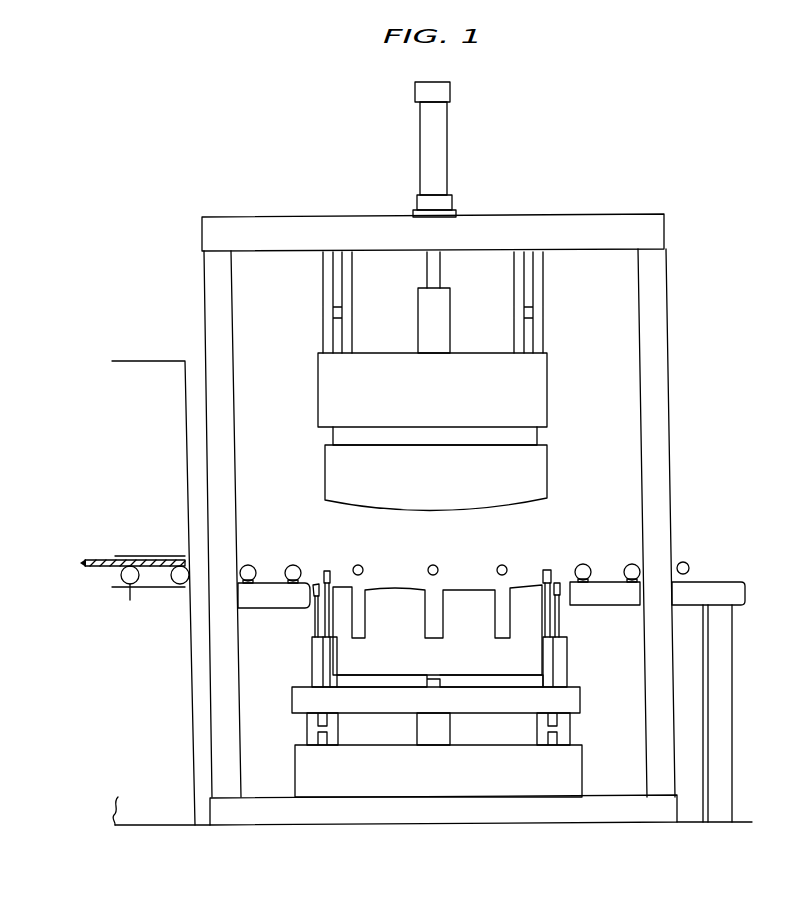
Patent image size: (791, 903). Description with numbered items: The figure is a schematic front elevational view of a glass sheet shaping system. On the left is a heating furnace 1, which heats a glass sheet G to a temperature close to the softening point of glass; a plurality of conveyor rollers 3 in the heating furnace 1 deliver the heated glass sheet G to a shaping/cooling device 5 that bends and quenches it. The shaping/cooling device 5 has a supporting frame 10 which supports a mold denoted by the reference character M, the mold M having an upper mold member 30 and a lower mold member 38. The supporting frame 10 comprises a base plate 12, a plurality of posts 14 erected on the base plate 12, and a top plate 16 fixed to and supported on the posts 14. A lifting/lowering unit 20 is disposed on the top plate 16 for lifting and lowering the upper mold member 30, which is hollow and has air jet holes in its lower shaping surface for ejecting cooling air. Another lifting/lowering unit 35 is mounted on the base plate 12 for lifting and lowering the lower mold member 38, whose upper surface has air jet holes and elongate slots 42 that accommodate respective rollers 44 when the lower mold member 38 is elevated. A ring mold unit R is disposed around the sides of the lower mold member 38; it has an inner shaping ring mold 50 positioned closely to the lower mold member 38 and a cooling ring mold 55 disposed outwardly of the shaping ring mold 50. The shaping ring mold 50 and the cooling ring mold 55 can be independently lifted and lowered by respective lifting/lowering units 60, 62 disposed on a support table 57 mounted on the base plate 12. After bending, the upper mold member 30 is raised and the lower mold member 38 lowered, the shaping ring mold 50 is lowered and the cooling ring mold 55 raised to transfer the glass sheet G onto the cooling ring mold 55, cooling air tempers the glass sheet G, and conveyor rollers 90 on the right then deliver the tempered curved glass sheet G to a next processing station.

The heating furnace 1 is at (110, 354).
The conveyor rollers 3 is at (150, 595).
The shaping/cooling device 5 is at (432, 474).
The supporting frame 10 is at (432, 512).
The base plate 12 is at (388, 815).
The posts 14 is at (212, 320).
The top plate 16 is at (311, 232).
The lifting/lowering unit 20 is at (440, 160).
The upper mold member 30 is at (447, 432).
The lifting/lowering unit 35 is at (440, 738).
The lower mold member 38 is at (437, 603).
The slots 42 is at (437, 608).
The rollers 44 is at (507, 566).
The shaping ring mold 50 is at (327, 570).
The cooling ring mold 55 is at (313, 598).
The support table 57 is at (375, 707).
The lifting/lowering unit 60 is at (337, 667).
The lifting/lowering unit 62 is at (327, 662).
The conveyor rollers 90 is at (631, 565).
The glass sheet G is at (102, 556).
The mold M is at (562, 473).
The ring mold unit R is at (556, 562).